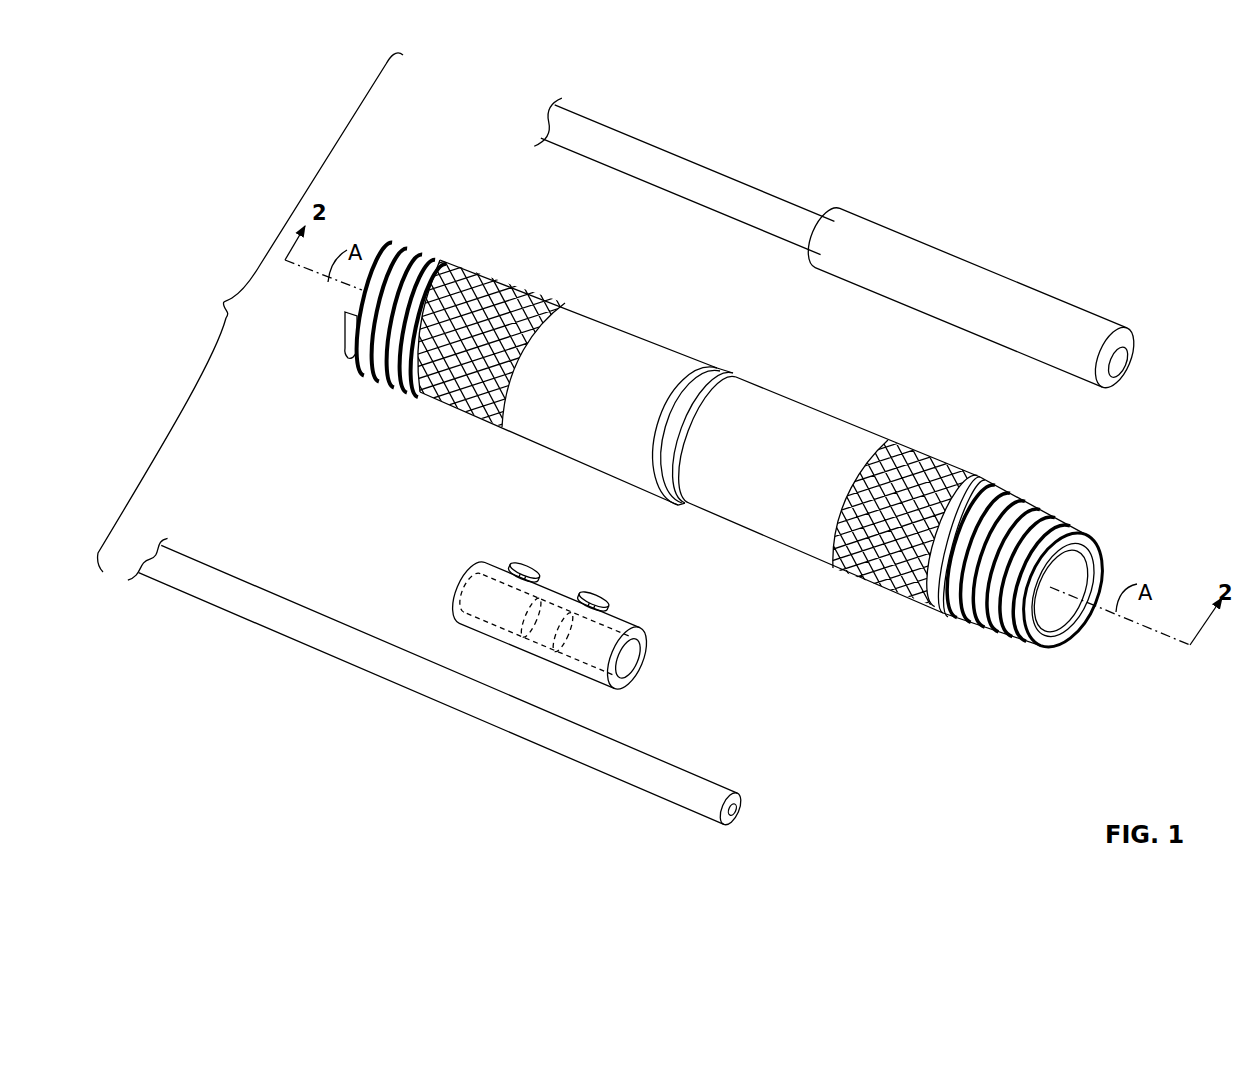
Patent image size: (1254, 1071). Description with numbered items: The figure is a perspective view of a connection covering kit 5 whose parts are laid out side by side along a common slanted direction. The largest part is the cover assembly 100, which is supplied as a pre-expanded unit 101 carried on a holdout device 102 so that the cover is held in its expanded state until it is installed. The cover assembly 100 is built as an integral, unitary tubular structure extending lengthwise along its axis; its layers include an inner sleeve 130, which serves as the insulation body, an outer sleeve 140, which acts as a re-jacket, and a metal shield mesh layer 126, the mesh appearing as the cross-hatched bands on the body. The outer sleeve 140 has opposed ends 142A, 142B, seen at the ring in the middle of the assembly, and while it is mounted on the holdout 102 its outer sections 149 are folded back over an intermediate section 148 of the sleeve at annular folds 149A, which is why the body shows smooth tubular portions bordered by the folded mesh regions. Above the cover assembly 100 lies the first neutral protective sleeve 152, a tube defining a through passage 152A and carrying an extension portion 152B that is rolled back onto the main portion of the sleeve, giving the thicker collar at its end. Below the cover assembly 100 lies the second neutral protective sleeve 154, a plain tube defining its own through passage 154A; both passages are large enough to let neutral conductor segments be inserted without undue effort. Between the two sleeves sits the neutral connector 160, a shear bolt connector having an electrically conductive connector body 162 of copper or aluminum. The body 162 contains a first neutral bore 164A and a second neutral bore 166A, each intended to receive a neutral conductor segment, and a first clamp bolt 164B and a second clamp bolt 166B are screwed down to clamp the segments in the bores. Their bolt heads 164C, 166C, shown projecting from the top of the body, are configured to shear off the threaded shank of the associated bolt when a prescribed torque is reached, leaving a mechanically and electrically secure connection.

The covering kit 5 is at (892, 236).
The cover assembly 100 is at (722, 433).
The pre-expanded unit 101 is at (690, 331).
The holdout device 102 is at (1047, 519).
The metal shield mesh layer 126 is at (493, 420).
The inner sleeve 130 is at (936, 594).
The outer sleeve 140 is at (700, 439).
The end 142A is at (684, 399).
The end 142B is at (688, 441).
The intermediate section 148 is at (683, 461).
The outer sections 149 is at (543, 430).
The annular folds 149A is at (440, 268).
The first neutral protective sleeve 152 is at (697, 147).
The through passage 152A is at (1126, 364).
The extension portion 152B is at (1004, 288).
The second neutral protective sleeve 154 is at (490, 699).
The through passage 154A is at (736, 808).
The neutral connector 160 is at (567, 622).
The connector body 162 is at (502, 567).
The first neutral bore 164A is at (462, 592).
The first clamp bolt 164B is at (503, 604).
The bolt head 164C is at (520, 570).
The second neutral bore 166A is at (640, 670).
The second clamp bolt 166B is at (578, 639).
The bolt head 166C is at (594, 598).